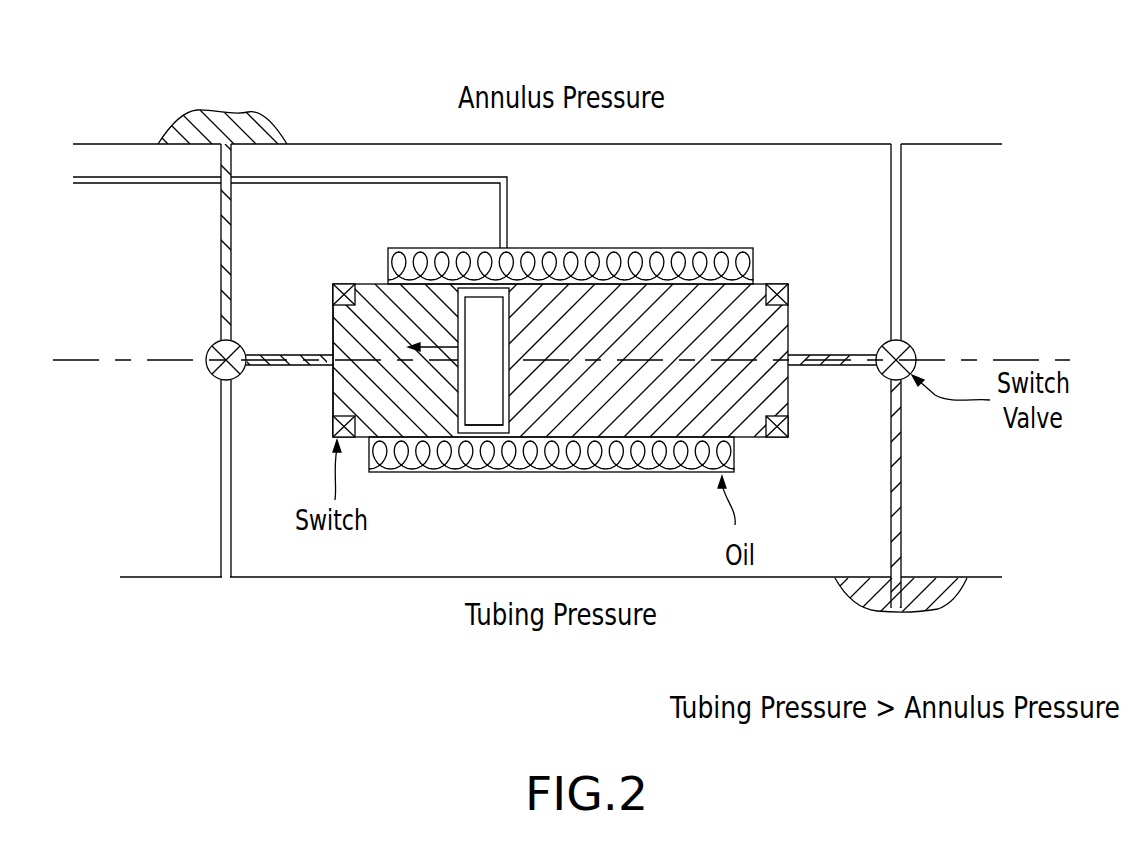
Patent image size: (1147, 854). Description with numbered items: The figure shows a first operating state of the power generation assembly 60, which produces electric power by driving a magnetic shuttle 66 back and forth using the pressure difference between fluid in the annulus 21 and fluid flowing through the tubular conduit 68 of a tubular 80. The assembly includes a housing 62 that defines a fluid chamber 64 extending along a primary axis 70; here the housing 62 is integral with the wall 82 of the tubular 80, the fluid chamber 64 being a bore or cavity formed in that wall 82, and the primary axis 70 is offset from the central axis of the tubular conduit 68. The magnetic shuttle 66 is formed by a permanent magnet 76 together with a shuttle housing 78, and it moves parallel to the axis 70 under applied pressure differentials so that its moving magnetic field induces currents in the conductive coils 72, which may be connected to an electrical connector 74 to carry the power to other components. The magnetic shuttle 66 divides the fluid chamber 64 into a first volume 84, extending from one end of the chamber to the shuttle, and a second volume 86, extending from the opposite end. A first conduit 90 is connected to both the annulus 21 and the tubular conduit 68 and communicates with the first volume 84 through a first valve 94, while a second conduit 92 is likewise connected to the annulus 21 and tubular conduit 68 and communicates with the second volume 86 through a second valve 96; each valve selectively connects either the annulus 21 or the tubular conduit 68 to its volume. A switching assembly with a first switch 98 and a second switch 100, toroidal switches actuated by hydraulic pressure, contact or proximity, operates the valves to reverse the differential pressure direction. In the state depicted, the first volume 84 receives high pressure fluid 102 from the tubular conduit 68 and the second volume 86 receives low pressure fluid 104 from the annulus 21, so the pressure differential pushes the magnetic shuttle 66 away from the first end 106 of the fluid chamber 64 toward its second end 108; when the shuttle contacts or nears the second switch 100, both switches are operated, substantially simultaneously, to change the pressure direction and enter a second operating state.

The annulus 21 is at (810, 95).
The power generation assembly 60 is at (122, 86).
The housing 62 is at (742, 170).
The fluid chamber 64 is at (613, 440).
The magnetic shuttle 66 is at (481, 290).
The tubular conduit 68 is at (725, 630).
The primary axis 70 is at (88, 358).
The conductive coils 72 is at (615, 248).
The electrical connector 74 is at (283, 185).
The permanent magnet 76 is at (483, 317).
The shuttle housing 78 is at (500, 437).
The tubular 80 is at (187, 579).
The wall 82 is at (398, 580).
The first volume 84 is at (667, 312).
The second volume 86 is at (405, 302).
The first conduit 90 is at (845, 355).
The second conduit 92 is at (220, 260).
The first valve 94 is at (912, 343).
The second valve 96 is at (242, 346).
The first switch 98 is at (775, 284).
The second switch 100 is at (343, 283).
The high pressure fluid 102 is at (897, 590).
The low pressure fluid 104 is at (252, 138).
The first end 106 is at (790, 403).
The second end 108 is at (333, 395).